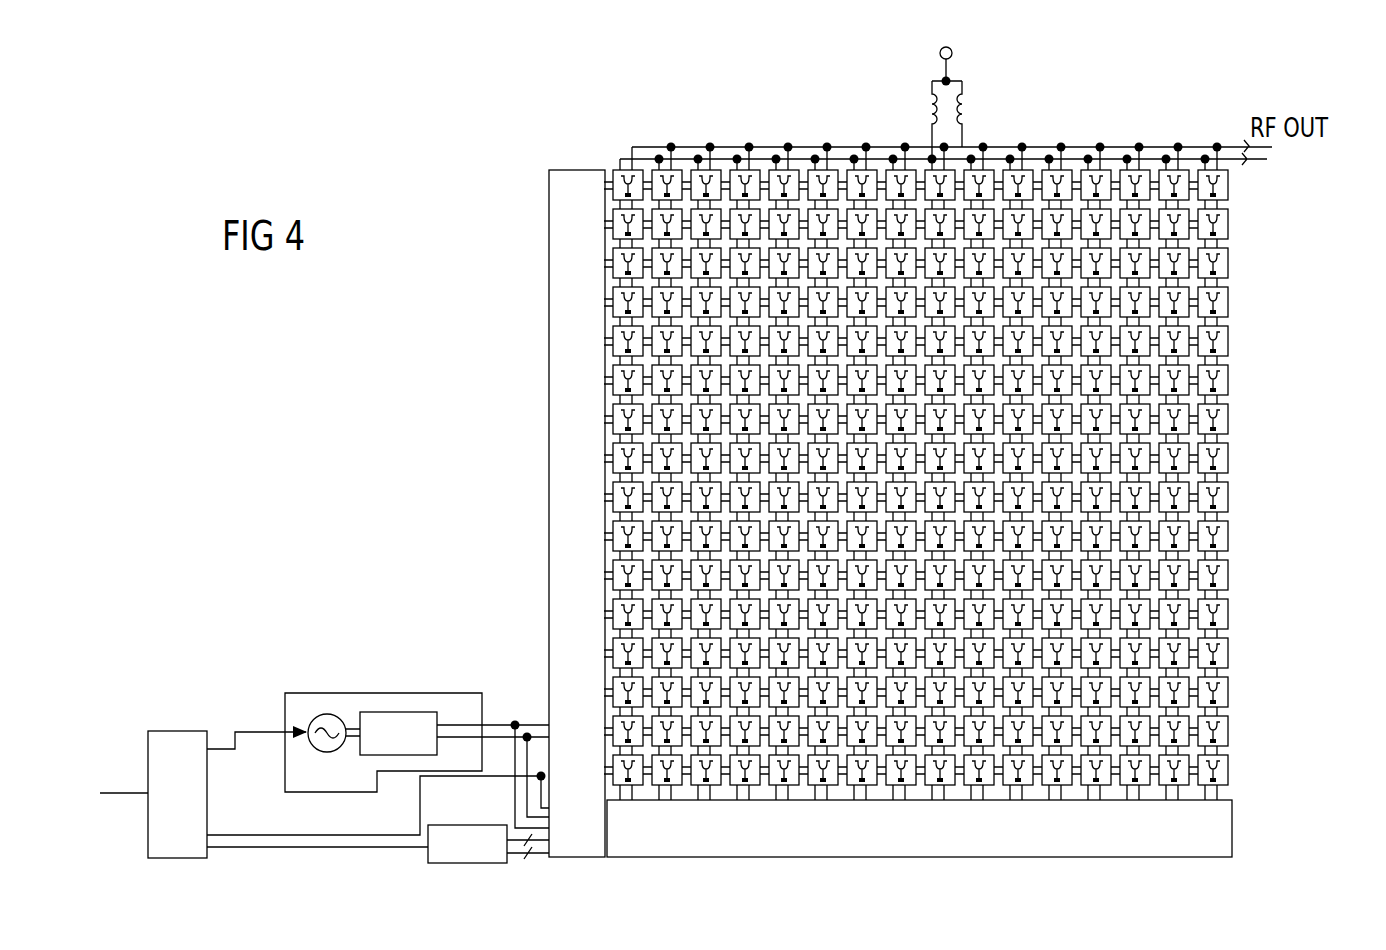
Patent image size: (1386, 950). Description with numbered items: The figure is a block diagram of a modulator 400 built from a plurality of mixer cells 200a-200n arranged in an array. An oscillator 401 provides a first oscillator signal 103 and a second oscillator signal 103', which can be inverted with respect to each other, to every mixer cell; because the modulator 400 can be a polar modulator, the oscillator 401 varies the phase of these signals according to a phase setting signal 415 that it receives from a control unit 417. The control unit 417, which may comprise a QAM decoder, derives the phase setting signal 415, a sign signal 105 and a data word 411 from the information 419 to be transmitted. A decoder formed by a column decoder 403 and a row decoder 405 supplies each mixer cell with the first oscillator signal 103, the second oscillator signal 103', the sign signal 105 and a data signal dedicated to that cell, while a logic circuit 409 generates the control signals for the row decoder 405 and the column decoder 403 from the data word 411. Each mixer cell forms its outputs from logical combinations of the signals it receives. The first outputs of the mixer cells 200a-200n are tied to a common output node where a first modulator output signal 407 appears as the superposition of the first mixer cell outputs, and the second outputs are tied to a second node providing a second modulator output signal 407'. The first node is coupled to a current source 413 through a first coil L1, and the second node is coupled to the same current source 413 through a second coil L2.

The modulator 400 is at (1322, 242).
The oscillator 401 is at (385, 693).
The column decoder 403 is at (1070, 857).
The row decoder 405 is at (548, 403).
The first modulator output signal 407 is at (959, 192).
The second modulator output signal 407' is at (952, 110).
The logic circuit 409 is at (485, 863).
The data word 411 is at (428, 862).
The current source 413 is at (952, 53).
The phase setting signal 415 is at (247, 737).
The control unit 417 is at (190, 731).
The information to be transmitted 419 is at (131, 794).
The first oscillator signal 103 is at (493, 737).
The second oscillator signal 103' is at (495, 746).
The sign signal 105 is at (497, 777).
The mixer cell 200a is at (616, 170).
The mixer cell 200n is at (1230, 776).
The first coil L1 is at (918, 120).
The second coil L2 is at (979, 114).